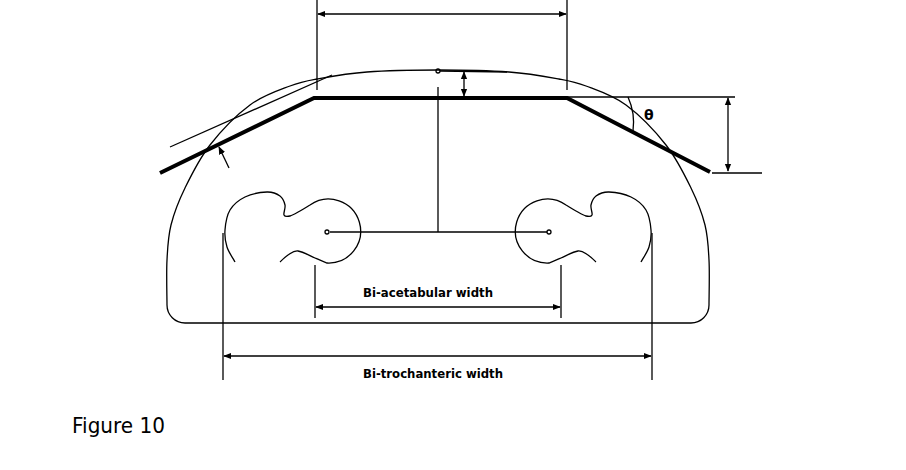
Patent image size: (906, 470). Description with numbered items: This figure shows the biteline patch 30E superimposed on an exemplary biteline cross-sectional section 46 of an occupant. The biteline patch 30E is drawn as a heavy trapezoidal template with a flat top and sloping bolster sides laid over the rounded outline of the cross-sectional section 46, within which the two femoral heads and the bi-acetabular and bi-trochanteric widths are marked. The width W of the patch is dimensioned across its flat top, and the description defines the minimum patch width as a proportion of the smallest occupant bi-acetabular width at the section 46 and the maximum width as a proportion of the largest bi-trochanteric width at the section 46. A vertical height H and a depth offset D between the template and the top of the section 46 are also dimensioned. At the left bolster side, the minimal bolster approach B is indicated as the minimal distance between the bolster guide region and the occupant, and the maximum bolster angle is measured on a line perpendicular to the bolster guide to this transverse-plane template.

The biteline patch 30E is at (270, 118).
The biteline cross-sectional section 46 is at (177, 213).
The width W is at (442, 45).
The template depth offset dimension D is at (473, 83).
The template height dimension H is at (664, 135).
The minimal bolster approach B is at (210, 122).